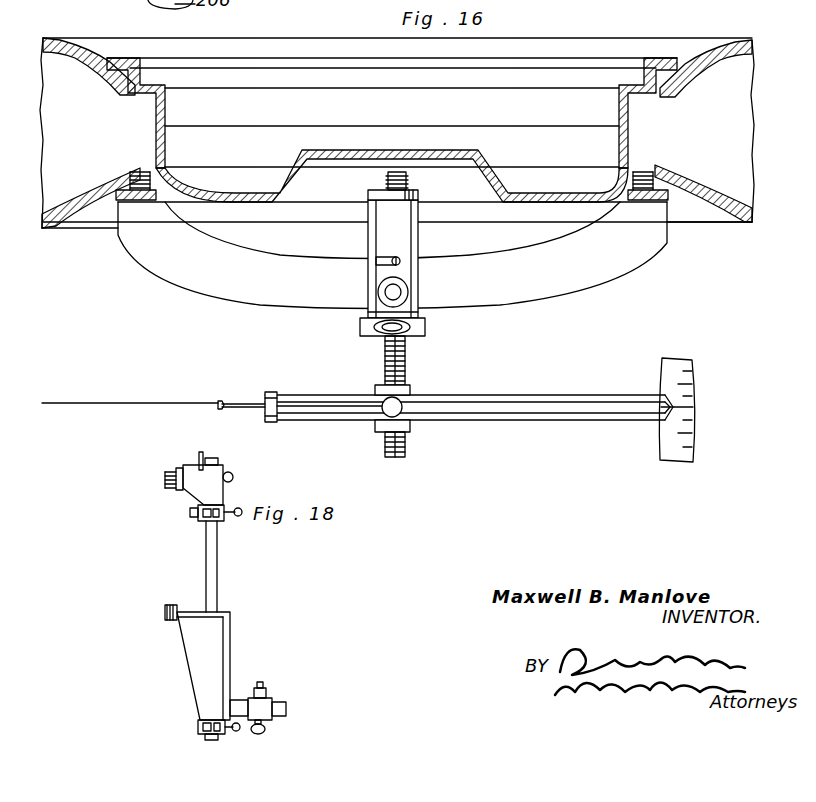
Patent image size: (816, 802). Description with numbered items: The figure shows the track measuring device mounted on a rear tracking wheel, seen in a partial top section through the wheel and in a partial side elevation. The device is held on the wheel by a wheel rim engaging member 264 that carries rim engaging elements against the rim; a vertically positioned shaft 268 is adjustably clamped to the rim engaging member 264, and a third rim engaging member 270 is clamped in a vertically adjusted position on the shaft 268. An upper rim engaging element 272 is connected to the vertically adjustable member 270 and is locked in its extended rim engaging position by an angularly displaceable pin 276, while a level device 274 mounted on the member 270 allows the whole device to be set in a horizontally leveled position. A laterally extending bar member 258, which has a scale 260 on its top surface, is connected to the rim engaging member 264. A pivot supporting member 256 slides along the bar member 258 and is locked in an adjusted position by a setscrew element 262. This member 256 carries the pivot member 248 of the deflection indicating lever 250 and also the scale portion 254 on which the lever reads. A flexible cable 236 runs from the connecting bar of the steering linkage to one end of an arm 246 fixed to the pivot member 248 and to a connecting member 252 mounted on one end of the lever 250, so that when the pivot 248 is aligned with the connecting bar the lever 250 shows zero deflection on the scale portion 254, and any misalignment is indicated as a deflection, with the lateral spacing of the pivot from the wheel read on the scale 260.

In FIG. 16, the flexible cable 236 is at (124, 402).
In FIG. 16, the arm 246 is at (243, 403).
In FIG. 16, the pivot member 248 is at (402, 402).
In FIG. 16, the deflection indicating lever 250 is at (478, 404).
In FIG. 16, the connecting member 252 is at (270, 393).
In FIG. 16, the scale portion 254 is at (672, 430).
In FIG. 16, the pivot supporting member 256 is at (411, 428).
In FIG. 18, the pivot supporting member 256 is at (266, 706).
In FIG. 16, the laterally extending bar member 258 is at (404, 450).
In FIG. 18, the laterally extending bar member 258 is at (288, 711).
In FIG. 16, the scale 260 is at (379, 370).
In FIG. 18, the setscrew element 262 is at (266, 729).
In FIG. 16, the wheel rim engaging member 264 is at (137, 168).
In FIG. 18, the wheel rim engaging member 264 is at (229, 667).
In FIG. 18, the vertically positioned shaft 268 is at (216, 603).
In FIG. 16, the third rim engaging member 270 is at (419, 241).
In FIG. 18, the third rim engaging member 270 is at (192, 470).
In FIG. 16, the upper rim engaging element 272 is at (404, 190).
In FIG. 18, the upper rim engaging element 272 is at (165, 475).
In FIG. 16, the level device 274 is at (421, 330).
In FIG. 16, the angularly displaceable pin 276 is at (402, 266).
In FIG. 18, the angularly displaceable pin 276 is at (206, 458).